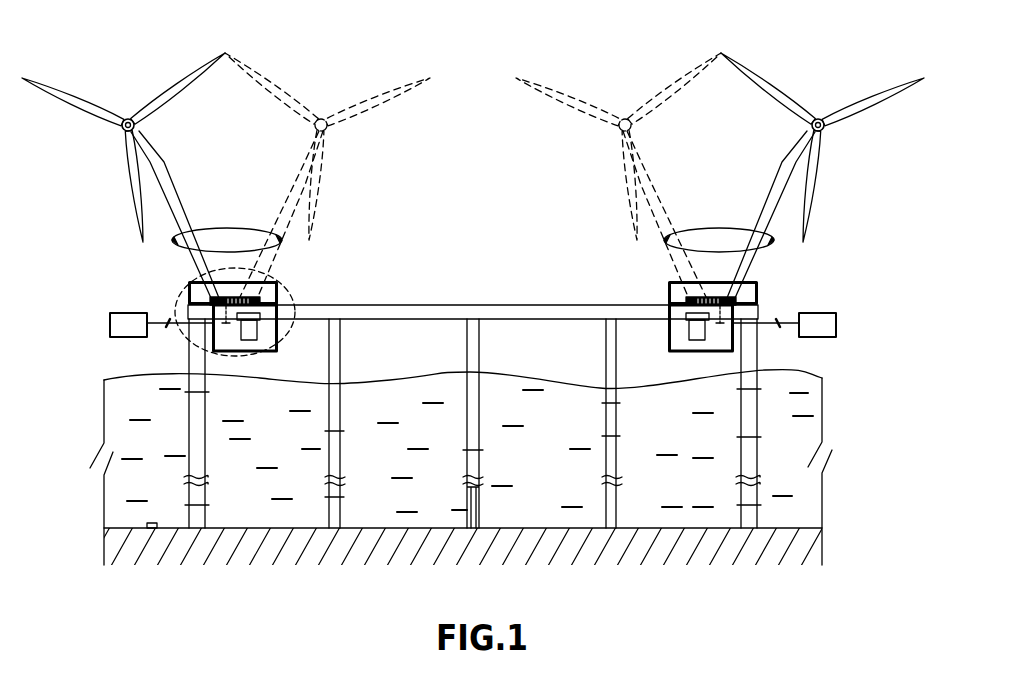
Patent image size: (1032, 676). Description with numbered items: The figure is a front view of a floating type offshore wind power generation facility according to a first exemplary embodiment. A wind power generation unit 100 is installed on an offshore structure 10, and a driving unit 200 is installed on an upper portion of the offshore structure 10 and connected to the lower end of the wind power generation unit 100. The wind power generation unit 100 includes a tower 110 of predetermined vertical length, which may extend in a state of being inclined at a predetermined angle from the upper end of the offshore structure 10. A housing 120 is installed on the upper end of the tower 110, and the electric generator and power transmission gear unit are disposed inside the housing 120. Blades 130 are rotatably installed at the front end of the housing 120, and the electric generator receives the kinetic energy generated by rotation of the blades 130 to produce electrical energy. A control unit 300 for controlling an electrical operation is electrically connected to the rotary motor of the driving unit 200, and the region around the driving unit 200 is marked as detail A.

The offshore structure 10 is at (432, 305).
The wind power generation unit 100 is at (123, 161).
The tower 110 is at (130, 153).
The housing 120 is at (128, 118).
The blades 130 is at (72, 100).
The driving unit 200 is at (290, 283).
The control unit 300 is at (110, 323).
The detail region A is at (177, 297).